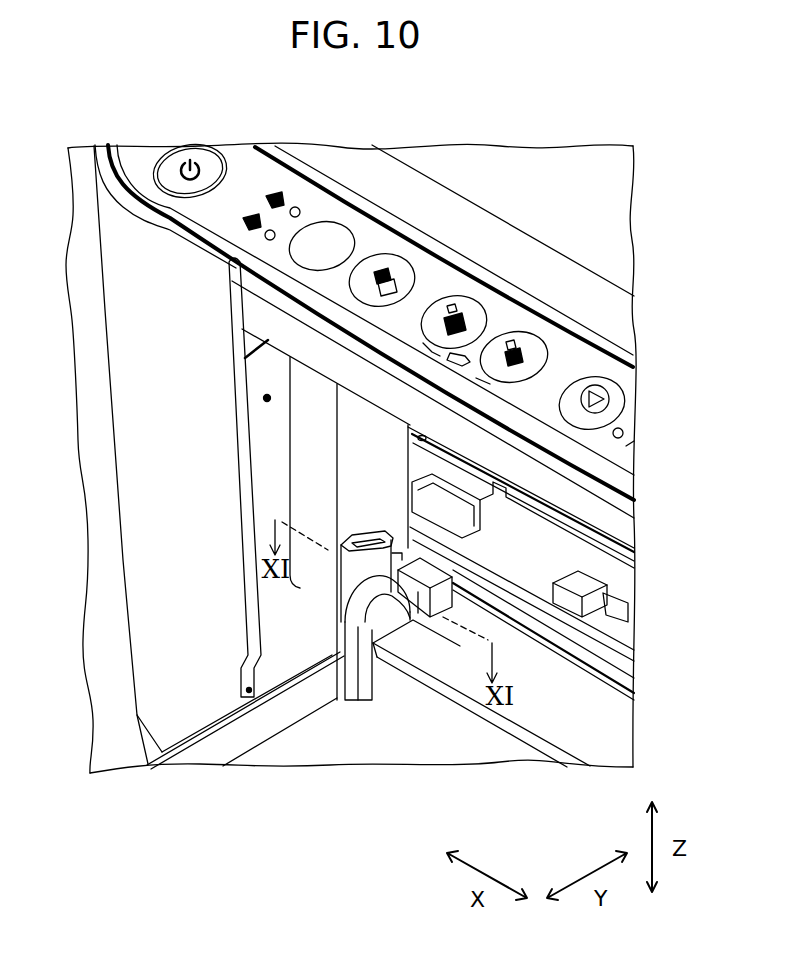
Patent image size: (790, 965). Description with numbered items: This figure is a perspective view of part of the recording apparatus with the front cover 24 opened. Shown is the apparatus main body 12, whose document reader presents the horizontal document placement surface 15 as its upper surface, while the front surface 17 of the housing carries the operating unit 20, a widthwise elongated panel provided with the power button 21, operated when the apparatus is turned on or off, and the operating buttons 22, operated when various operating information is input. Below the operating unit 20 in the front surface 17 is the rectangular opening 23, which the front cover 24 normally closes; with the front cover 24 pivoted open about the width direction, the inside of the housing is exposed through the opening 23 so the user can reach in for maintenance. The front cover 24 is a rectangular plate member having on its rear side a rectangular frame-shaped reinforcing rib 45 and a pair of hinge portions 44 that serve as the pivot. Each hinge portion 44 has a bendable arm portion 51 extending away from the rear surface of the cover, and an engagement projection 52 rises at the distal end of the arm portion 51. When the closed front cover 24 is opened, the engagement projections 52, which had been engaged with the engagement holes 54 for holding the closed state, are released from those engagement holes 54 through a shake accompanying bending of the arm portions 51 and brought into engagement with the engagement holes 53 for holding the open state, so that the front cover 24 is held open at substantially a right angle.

The apparatus main body 12 is at (125, 563).
The document placement surface 15 is at (530, 157).
The front surface 17 is at (150, 433).
The operating unit 20 is at (210, 215).
The power button 21 is at (189, 150).
The operating buttons 22 is at (470, 305).
The opening 23 is at (265, 398).
The front cover 24 is at (357, 750).
The hinge portions 44 is at (385, 622).
The reinforcing rib 45 is at (207, 742).
The arm portion 51 is at (358, 563).
The engagement projection 52 is at (351, 541).
The engagement holes 53 is at (356, 538).
The engagement holes 54 is at (395, 555).